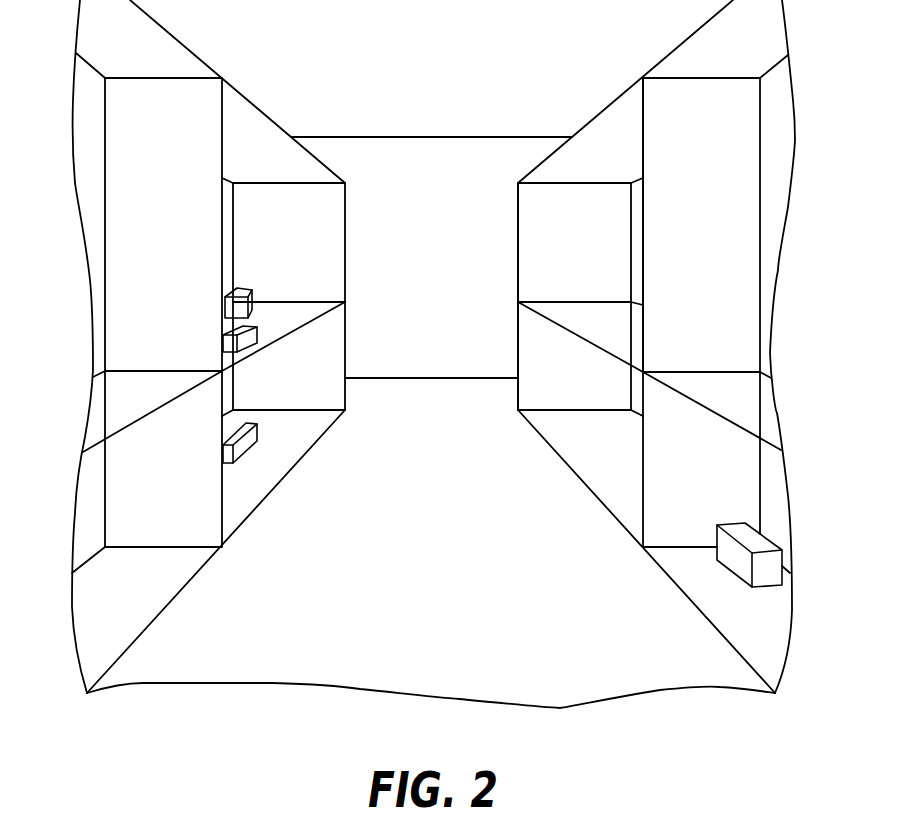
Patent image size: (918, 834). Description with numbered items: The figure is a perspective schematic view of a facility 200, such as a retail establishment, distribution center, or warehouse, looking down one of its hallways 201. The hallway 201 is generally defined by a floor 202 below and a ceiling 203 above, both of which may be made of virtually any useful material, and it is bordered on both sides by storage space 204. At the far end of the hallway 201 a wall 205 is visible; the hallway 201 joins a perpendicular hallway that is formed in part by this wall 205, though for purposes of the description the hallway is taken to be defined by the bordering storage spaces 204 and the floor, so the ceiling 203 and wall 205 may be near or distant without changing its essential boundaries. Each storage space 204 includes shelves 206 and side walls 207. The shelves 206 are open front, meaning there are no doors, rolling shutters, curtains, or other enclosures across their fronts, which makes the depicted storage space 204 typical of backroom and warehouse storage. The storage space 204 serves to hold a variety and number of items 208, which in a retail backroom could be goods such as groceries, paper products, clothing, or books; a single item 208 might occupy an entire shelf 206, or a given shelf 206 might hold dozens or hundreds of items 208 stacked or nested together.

The facility 200 is at (450, 749).
The hallway 201 is at (450, 427).
The floor 202 is at (405, 520).
The ceiling 203 is at (407, 60).
The storage space 204 is at (303, 214).
The wall 205 is at (452, 332).
The shelf 206 is at (572, 308).
The side wall 207 is at (684, 180).
The item 208 is at (235, 288).